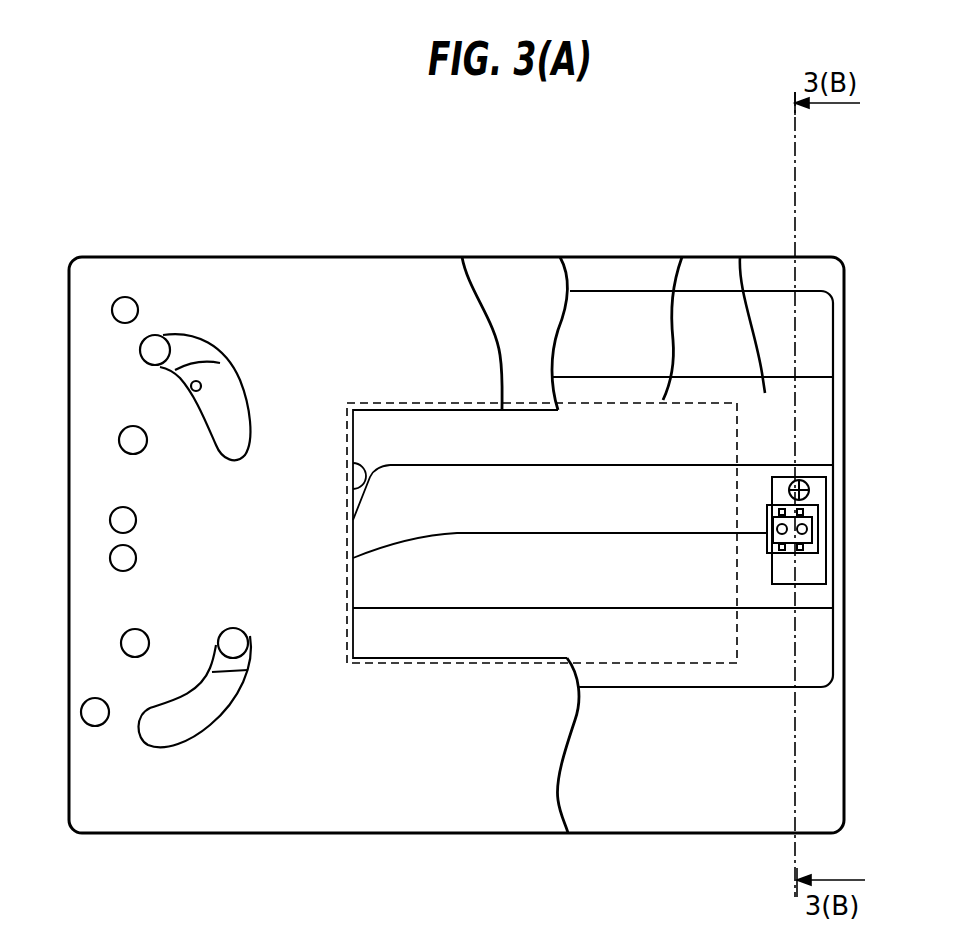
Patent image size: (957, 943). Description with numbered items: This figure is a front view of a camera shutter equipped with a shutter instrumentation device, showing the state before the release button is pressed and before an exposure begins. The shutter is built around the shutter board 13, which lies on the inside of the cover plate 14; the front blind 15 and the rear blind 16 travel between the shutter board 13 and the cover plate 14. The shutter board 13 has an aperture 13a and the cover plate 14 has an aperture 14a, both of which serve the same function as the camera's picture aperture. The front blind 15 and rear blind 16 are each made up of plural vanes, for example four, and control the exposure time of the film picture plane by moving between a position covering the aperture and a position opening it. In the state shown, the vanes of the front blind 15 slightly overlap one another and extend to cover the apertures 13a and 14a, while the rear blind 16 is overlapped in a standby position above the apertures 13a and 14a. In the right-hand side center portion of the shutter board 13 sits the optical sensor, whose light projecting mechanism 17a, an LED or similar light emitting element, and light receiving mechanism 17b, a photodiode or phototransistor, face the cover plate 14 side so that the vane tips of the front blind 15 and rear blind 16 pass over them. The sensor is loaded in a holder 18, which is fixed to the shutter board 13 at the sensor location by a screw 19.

The shutter board 13 is at (390, 290).
The aperture 13a is at (462, 257).
The cover plate 14 is at (592, 268).
The aperture 14a is at (682, 257).
The front blind 15 is at (740, 257).
The rear blind 16 is at (802, 312).
The light projecting mechanism 17a is at (805, 522).
The light receiving mechanism 17b is at (820, 535).
The holder 18 is at (815, 570).
The screw 19 is at (808, 480).